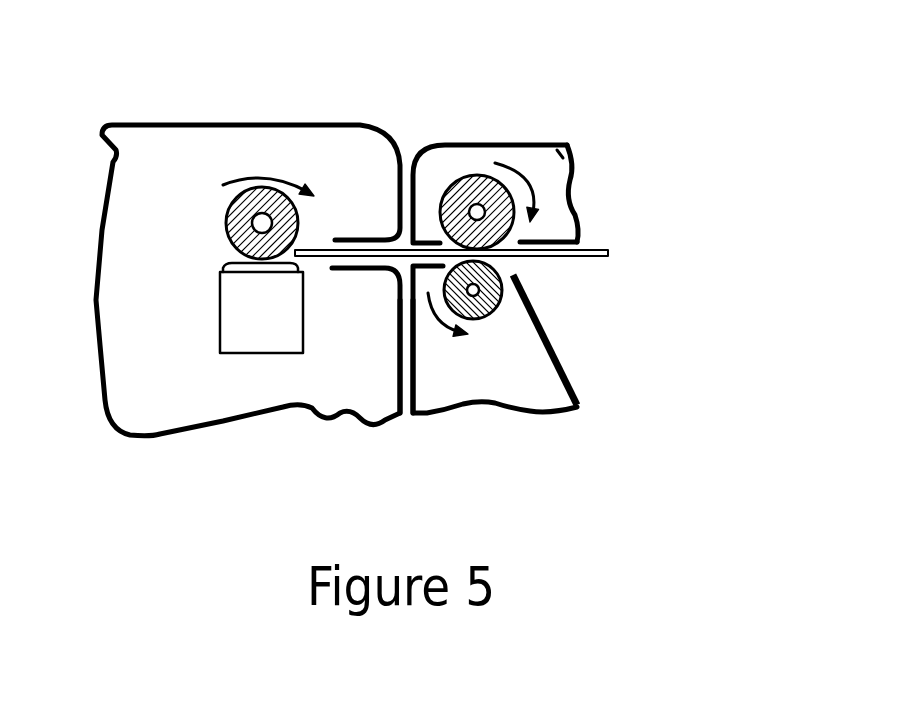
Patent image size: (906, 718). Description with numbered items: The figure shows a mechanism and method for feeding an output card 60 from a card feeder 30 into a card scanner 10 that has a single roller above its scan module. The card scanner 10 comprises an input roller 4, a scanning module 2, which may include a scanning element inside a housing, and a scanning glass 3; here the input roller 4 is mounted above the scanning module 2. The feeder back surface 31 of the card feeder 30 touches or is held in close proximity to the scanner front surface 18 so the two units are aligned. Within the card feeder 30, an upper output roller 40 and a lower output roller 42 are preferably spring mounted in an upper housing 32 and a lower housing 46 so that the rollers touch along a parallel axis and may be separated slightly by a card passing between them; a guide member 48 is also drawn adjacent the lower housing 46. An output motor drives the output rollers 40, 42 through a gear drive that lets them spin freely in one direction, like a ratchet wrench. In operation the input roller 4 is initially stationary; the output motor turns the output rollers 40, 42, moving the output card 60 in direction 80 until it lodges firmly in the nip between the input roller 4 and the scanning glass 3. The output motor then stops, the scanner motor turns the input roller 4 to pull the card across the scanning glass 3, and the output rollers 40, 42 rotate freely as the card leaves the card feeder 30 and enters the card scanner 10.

The scanning module 2 is at (242, 326).
The scanning glass 3 is at (223, 265).
The input roller 4 is at (228, 230).
The card scanner 10 is at (268, 105).
The scanner front surface 18 is at (397, 385).
The card feeder 30 is at (553, 108).
The feeder back surface 31 is at (413, 392).
The upper housing 32 is at (567, 145).
The upper output roller 40 is at (462, 178).
The lower output roller 42 is at (497, 310).
The lower housing 46 is at (480, 377).
The guide plate / inclined bar 48 is at (563, 365).
The output card 60 is at (597, 243).
The direction 80 is at (636, 252).